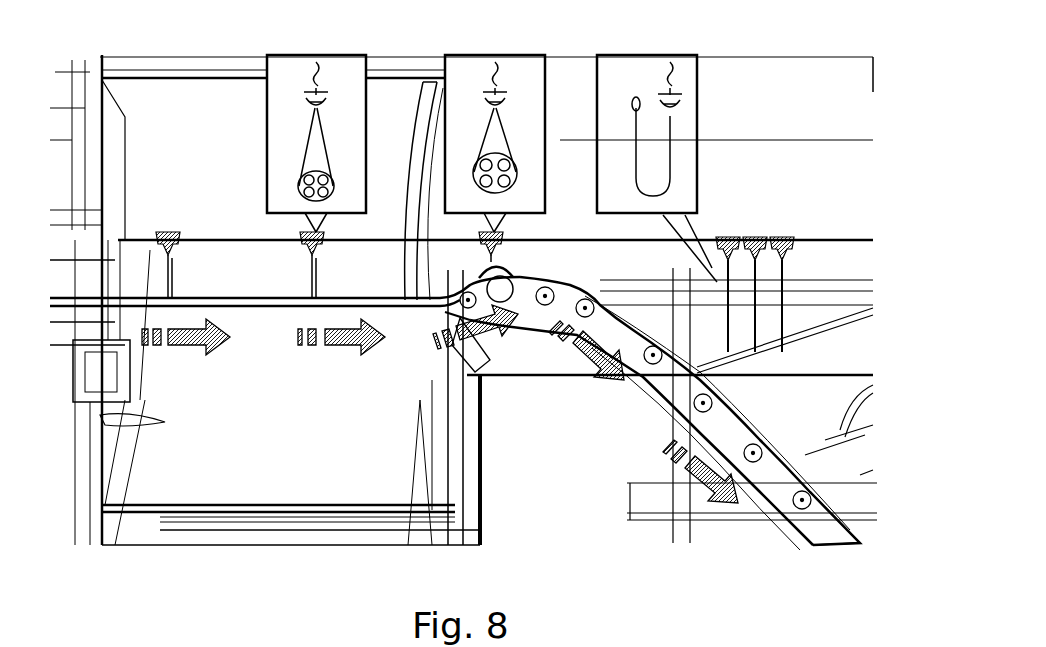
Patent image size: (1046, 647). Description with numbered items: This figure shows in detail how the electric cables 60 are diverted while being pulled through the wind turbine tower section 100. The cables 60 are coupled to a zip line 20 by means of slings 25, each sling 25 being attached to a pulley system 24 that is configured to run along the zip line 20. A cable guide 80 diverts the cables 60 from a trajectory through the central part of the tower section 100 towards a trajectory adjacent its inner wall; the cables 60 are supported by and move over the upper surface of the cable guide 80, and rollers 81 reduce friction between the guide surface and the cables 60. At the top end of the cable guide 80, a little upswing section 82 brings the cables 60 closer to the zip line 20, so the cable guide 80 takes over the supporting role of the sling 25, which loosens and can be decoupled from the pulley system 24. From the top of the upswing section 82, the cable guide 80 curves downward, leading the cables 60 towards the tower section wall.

The zip line 20 is at (213, 240).
The pulley system 24 is at (670, 63).
The sling 25 is at (173, 283).
The electric cables 60 is at (237, 300).
The cable guide 80 is at (660, 390).
The rollers 81 is at (803, 500).
The upswing section 82 is at (513, 318).
The wind turbine tower section 100 is at (228, 487).